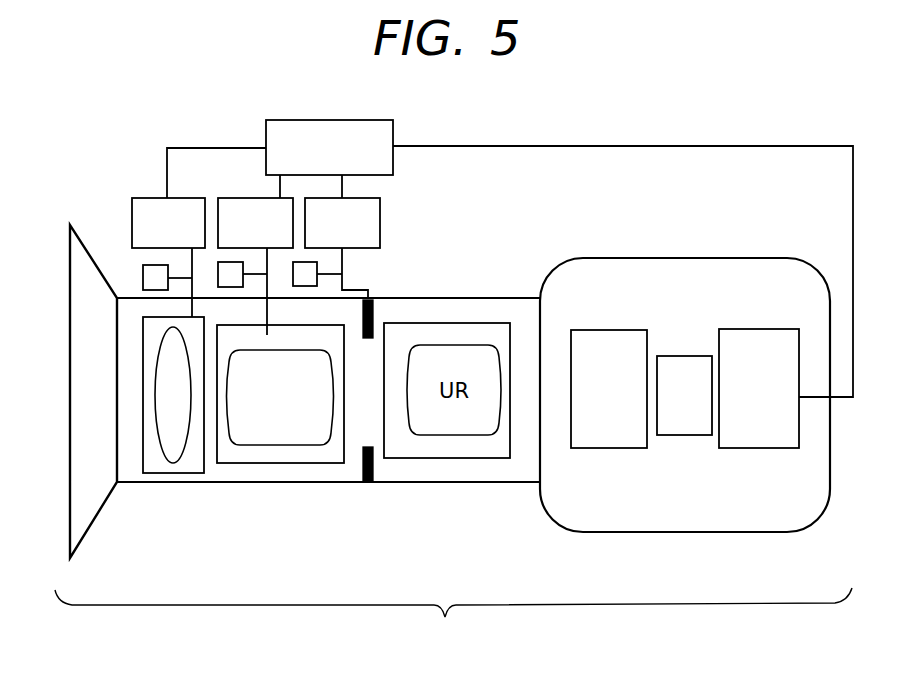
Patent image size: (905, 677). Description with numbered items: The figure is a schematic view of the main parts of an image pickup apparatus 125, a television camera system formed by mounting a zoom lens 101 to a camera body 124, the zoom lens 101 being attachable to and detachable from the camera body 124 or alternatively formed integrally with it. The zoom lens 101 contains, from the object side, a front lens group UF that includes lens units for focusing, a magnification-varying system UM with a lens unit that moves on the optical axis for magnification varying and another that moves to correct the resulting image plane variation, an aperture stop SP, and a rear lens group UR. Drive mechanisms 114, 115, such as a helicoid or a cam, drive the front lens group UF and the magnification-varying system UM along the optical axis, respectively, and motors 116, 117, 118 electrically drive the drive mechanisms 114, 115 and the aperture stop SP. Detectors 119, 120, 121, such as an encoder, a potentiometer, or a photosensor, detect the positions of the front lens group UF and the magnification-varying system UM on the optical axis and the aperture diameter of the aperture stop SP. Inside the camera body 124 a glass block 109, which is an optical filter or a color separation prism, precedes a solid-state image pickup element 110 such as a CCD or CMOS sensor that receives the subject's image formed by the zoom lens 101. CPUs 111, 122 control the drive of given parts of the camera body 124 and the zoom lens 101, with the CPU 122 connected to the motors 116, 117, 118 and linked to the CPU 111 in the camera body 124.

The zoom lens 101 is at (66, 326).
The glass block 109 is at (609, 389).
The solid-state image pickup element 110 is at (684, 395).
The CPU 111 is at (759, 388).
The drive mechanism 114 is at (161, 475).
The drive mechanism 115 is at (272, 465).
The motor 116 is at (168, 257).
The motor 117 is at (255, 266).
The motor 118 is at (342, 248).
The detector 119 is at (143, 272).
The detector 120 is at (228, 262).
The detector 121 is at (317, 266).
The CPU 122 is at (510, 258).
The camera body 124 is at (722, 532).
The image pickup apparatus 125 is at (453, 617).
The aperture stop SP is at (366, 484).